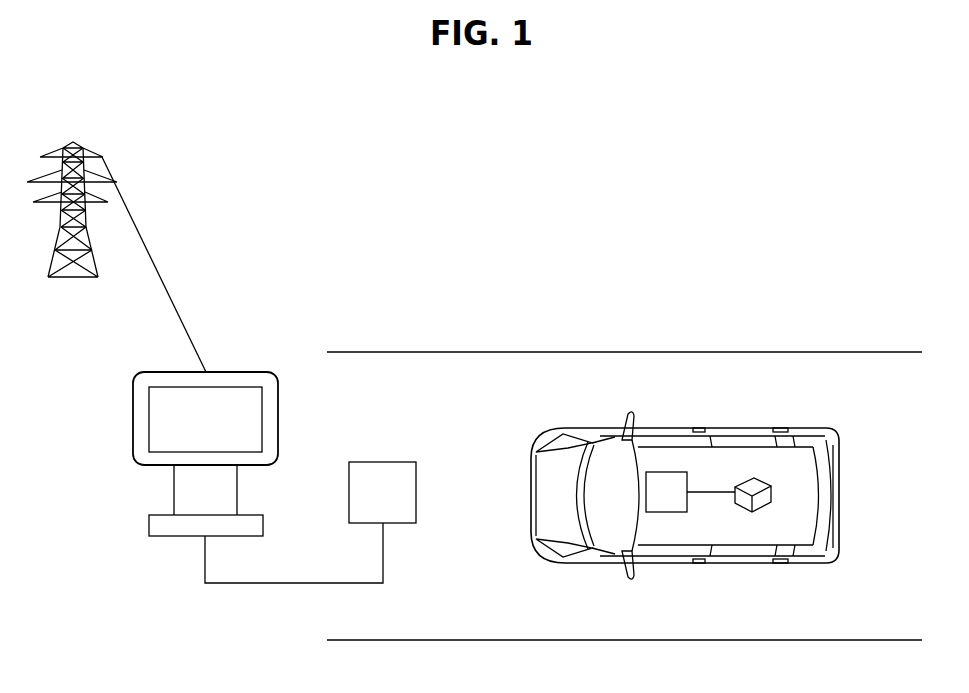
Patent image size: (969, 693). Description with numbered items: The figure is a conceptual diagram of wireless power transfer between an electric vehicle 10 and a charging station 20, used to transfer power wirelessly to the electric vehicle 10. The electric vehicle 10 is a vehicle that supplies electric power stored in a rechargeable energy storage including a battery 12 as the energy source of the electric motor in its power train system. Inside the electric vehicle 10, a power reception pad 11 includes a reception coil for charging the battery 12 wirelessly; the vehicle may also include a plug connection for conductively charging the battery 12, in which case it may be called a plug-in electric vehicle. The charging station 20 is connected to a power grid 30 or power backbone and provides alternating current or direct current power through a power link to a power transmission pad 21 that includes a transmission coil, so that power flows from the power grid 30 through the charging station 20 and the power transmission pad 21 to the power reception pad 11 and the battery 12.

The electric vehicle 10 is at (708, 430).
The power reception pad 11 is at (665, 472).
The battery 12 is at (757, 477).
The charging station 20 is at (236, 372).
The power transmission pad 21 is at (385, 462).
The power grid 30 is at (70, 148).